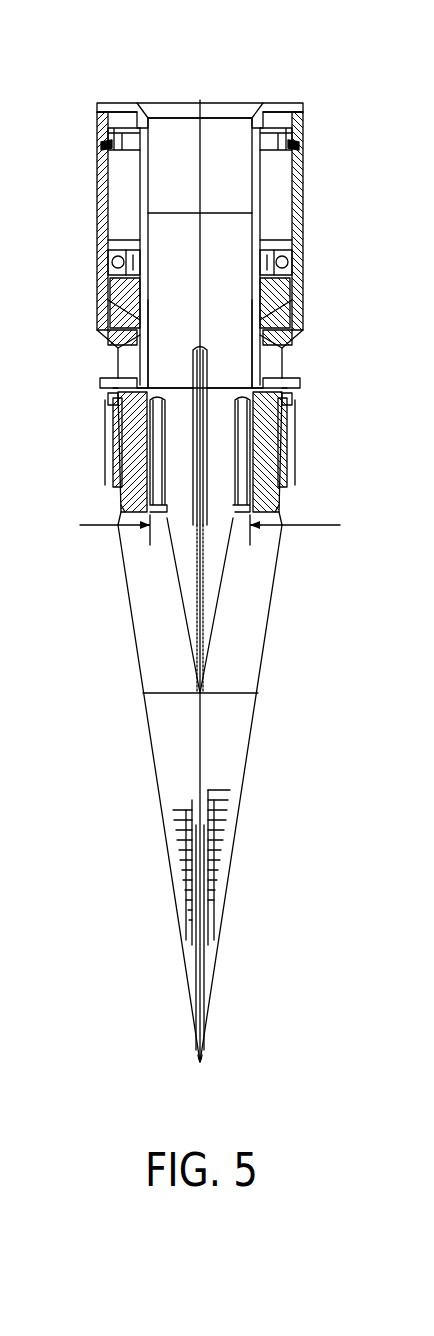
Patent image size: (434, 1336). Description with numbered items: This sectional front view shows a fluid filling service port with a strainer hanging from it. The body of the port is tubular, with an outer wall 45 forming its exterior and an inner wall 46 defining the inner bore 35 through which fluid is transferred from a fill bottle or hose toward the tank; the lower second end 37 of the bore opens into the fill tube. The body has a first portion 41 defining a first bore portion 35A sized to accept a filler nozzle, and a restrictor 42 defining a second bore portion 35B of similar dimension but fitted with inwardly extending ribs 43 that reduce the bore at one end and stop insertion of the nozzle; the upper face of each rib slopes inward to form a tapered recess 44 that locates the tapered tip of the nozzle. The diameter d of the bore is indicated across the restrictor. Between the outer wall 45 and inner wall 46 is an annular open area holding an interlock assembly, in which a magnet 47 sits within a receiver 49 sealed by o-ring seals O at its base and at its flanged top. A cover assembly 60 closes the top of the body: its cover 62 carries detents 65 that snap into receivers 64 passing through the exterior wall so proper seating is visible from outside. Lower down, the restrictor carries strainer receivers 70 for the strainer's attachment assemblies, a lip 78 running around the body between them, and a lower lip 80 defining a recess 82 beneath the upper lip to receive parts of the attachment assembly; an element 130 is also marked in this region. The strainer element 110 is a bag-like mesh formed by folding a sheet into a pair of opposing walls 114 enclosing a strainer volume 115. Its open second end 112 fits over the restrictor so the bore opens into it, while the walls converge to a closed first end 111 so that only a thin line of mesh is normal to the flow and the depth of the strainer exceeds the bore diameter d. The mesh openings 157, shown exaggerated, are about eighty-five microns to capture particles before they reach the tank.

The cover 62 is at (114, 100).
The inner bore 35 is at (222, 140).
The cover assembly 60 is at (304, 100).
The receivers 64 is at (108, 142).
The detents 65 is at (102, 150).
The outer wall 45 is at (108, 242).
The first portion 41 is at (108, 262).
The magnet 47 is at (110, 294).
The second end 37 is at (118, 325).
The lip 78 is at (118, 380).
The strainer receiver 70 is at (106, 402).
The second bore portion 35B is at (150, 441).
The restrictor 42 is at (121, 482).
The diameter of bore d is at (196, 540).
The inner wall 46 is at (145, 180).
The receiver 49 is at (130, 284).
The ribs 43 is at (201, 345).
The first bore portion 35A is at (253, 258).
The o-ring seals O is at (292, 262).
The tapered recess 44 is at (282, 350).
The second end 112 is at (288, 425).
The outer plate 130 is at (288, 452).
The recess 82 is at (282, 470).
The lower lip 80 is at (262, 512).
The strainer element 110 is at (283, 605).
The strainer volume 115 is at (252, 716).
The walls 114 is at (153, 762).
The openings 157 is at (224, 868).
The first end 111 is at (206, 1057).